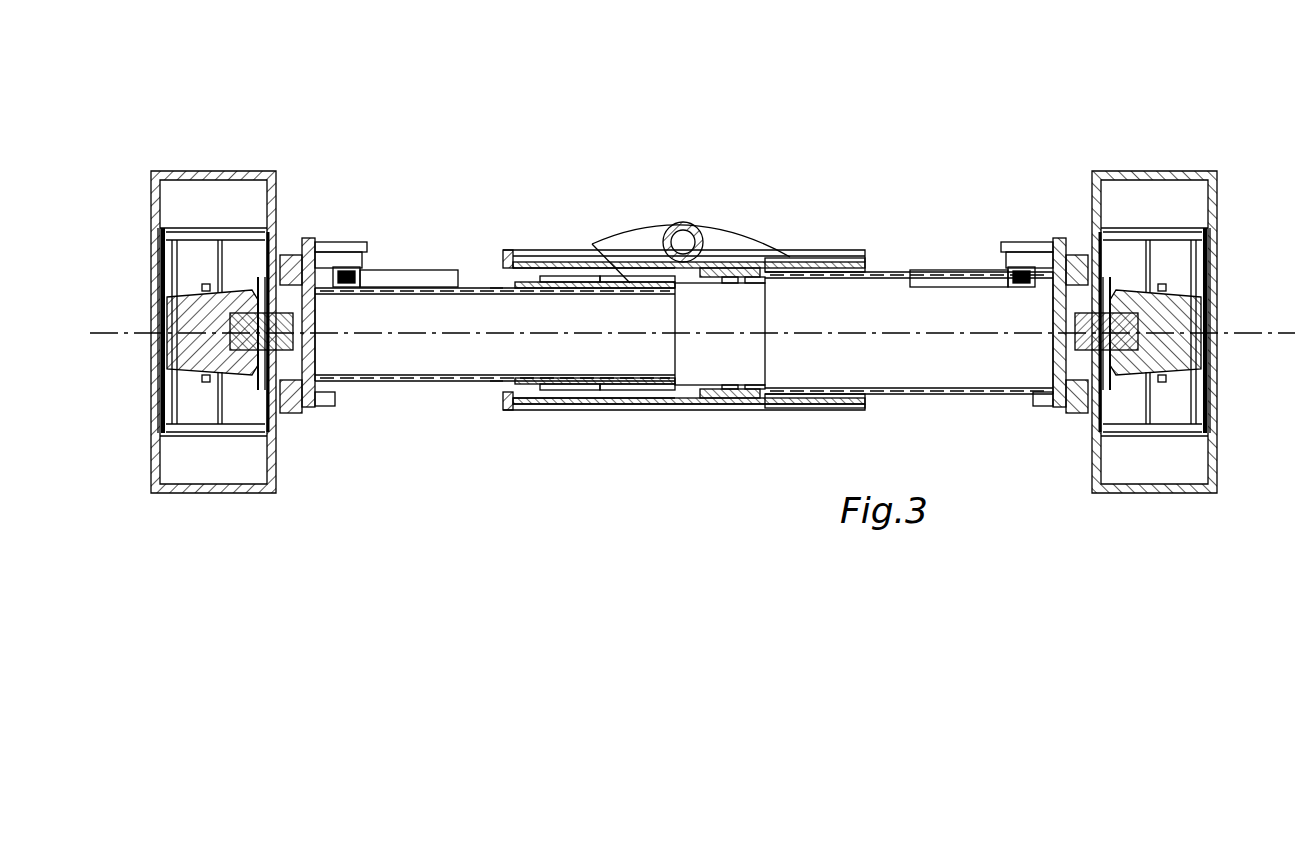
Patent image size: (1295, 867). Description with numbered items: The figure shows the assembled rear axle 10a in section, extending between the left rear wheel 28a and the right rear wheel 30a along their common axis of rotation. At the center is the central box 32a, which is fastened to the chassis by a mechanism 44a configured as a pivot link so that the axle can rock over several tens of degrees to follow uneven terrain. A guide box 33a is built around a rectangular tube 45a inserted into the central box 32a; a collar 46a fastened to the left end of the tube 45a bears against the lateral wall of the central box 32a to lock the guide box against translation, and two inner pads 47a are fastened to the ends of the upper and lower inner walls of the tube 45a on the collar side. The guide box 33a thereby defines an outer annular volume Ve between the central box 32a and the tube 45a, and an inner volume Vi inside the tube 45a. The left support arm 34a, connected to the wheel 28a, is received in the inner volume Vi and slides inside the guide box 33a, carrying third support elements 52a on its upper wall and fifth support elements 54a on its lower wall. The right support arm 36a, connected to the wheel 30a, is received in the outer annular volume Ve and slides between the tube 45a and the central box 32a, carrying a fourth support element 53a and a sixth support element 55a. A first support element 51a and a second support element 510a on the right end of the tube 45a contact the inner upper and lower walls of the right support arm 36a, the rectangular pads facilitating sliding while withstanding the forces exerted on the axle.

The rear axle 10a is at (282, 68).
The left rear wheel 28a is at (152, 200).
The right rear wheel 30a is at (1216, 195).
The central box 32a is at (717, 248).
The guide box 33a is at (490, 268).
The left support arm 34a is at (420, 400).
The right support arm 36a is at (1013, 416).
The mechanism 44a is at (683, 222).
The rectangular tube 45a is at (570, 288).
The collar 46a is at (505, 262).
The inner pads 47a is at (537, 288).
The first support element 51a is at (752, 276).
The third support element 52a is at (572, 286).
The fourth support element 53a is at (727, 272).
The fifth support element 54a is at (572, 385).
The sixth support element 55a is at (732, 390).
The second support element 510a is at (758, 390).
The outer annular volume Ve is at (650, 270).
The inner volume Vi is at (713, 353).